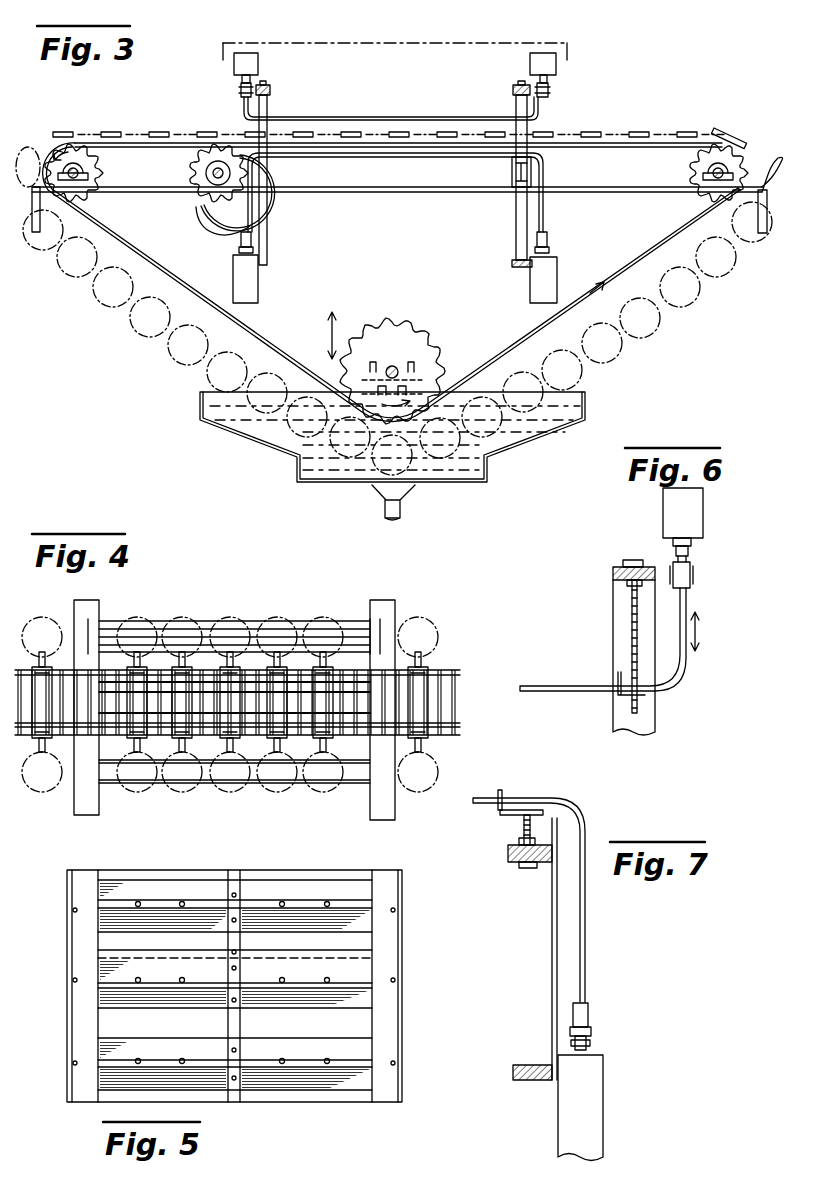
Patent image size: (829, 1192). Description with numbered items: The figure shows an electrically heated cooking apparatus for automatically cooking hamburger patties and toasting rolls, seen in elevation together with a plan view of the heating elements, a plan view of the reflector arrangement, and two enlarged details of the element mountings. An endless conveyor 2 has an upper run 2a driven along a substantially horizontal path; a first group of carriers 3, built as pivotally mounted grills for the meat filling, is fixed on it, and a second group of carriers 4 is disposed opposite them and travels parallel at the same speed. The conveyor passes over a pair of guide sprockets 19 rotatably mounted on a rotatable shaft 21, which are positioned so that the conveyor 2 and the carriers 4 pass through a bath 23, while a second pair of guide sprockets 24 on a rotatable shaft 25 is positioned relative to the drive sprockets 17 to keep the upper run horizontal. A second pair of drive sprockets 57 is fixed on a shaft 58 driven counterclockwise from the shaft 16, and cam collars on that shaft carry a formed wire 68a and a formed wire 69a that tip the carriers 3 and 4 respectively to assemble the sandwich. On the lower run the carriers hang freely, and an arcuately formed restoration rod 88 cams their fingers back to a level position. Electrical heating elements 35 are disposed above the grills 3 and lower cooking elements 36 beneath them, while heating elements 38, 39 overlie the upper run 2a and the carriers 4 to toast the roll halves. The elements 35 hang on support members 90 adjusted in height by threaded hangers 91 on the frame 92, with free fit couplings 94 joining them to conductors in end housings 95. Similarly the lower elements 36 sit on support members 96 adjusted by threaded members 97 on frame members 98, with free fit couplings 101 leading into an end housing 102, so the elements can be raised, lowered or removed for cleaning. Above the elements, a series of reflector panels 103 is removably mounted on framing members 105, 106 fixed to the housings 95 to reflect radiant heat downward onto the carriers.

In FIG. 3, the endless conveyor 2 is at (253, 347).
In FIG. 3, the upper run 2a is at (602, 142).
In FIG. 4, the first group of carriers 3 is at (33, 613).
In FIG. 3, the second group of carriers 4 is at (100, 298).
In FIG. 4, the second group of carriers 4 is at (133, 793).
In FIG. 3, the shaft 16 is at (77, 177).
In FIG. 3, the drive sprockets 17 is at (100, 166).
In FIG. 3, the guide sprockets 19 is at (400, 328).
In FIG. 3, the rotatable shaft 21 is at (398, 369).
In FIG. 3, the bath 23 is at (453, 470).
In FIG. 3, the second pair of guide sprockets 24 is at (732, 160).
In FIG. 3, the rotatable shaft 25 is at (715, 180).
In FIG. 3, the electrical heating or cooking elements 35 is at (418, 118).
In FIG. 4, the electrical heating or cooking elements 35 is at (118, 622).
In FIG. 6, the electrical heating or cooking elements 35 is at (660, 688).
In FIG. 3, the lower cooking elements 36 is at (330, 153).
In FIG. 7, the lower cooking elements 36 is at (585, 820).
In FIG. 4, the heating elements 38 is at (353, 712).
In FIG. 4, the heating elements 39 is at (277, 787).
In FIG. 3, the second pair of drive sprockets 57 is at (200, 183).
In FIG. 3, the shaft 58 is at (213, 170).
In FIG. 3, the formed wire 68a is at (218, 233).
In FIG. 3, the formed wire 69a is at (270, 208).
In FIG. 3, the restoration rod 88 is at (736, 248).
In FIG. 6, the support members 90 is at (617, 697).
In FIG. 3, the threaded hangers 91 is at (267, 100).
In FIG. 6, the threaded hangers 91 is at (631, 615).
In FIG. 6, the frame 92 is at (613, 648).
In FIG. 3, the free fit couplings 94 is at (241, 90).
In FIG. 6, the free fit couplings 94 is at (692, 580).
In FIG. 3, the end housings 95 is at (259, 62).
In FIG. 4, the end housings 95 is at (388, 607).
In FIG. 6, the end housings 95 is at (662, 508).
In FIG. 7, the support members 96 is at (500, 812).
In FIG. 3, the threaded members 97 is at (512, 168).
In FIG. 7, the threaded members 97 is at (525, 826).
In FIG. 7, the frame members 98 is at (516, 858).
In FIG. 3, the free fit couplings 101 is at (252, 239).
In FIG. 7, the free fit couplings 101 is at (590, 1018).
In FIG. 3, the end housing 102 is at (258, 283).
In FIG. 7, the end housing 102 is at (594, 1088).
In FIG. 3, the panels 103 is at (357, 43).
In FIG. 5, the panels 103 is at (275, 887).
In FIG. 5, the framing member 105 is at (80, 950).
In FIG. 5, the framing member 106 is at (395, 935).